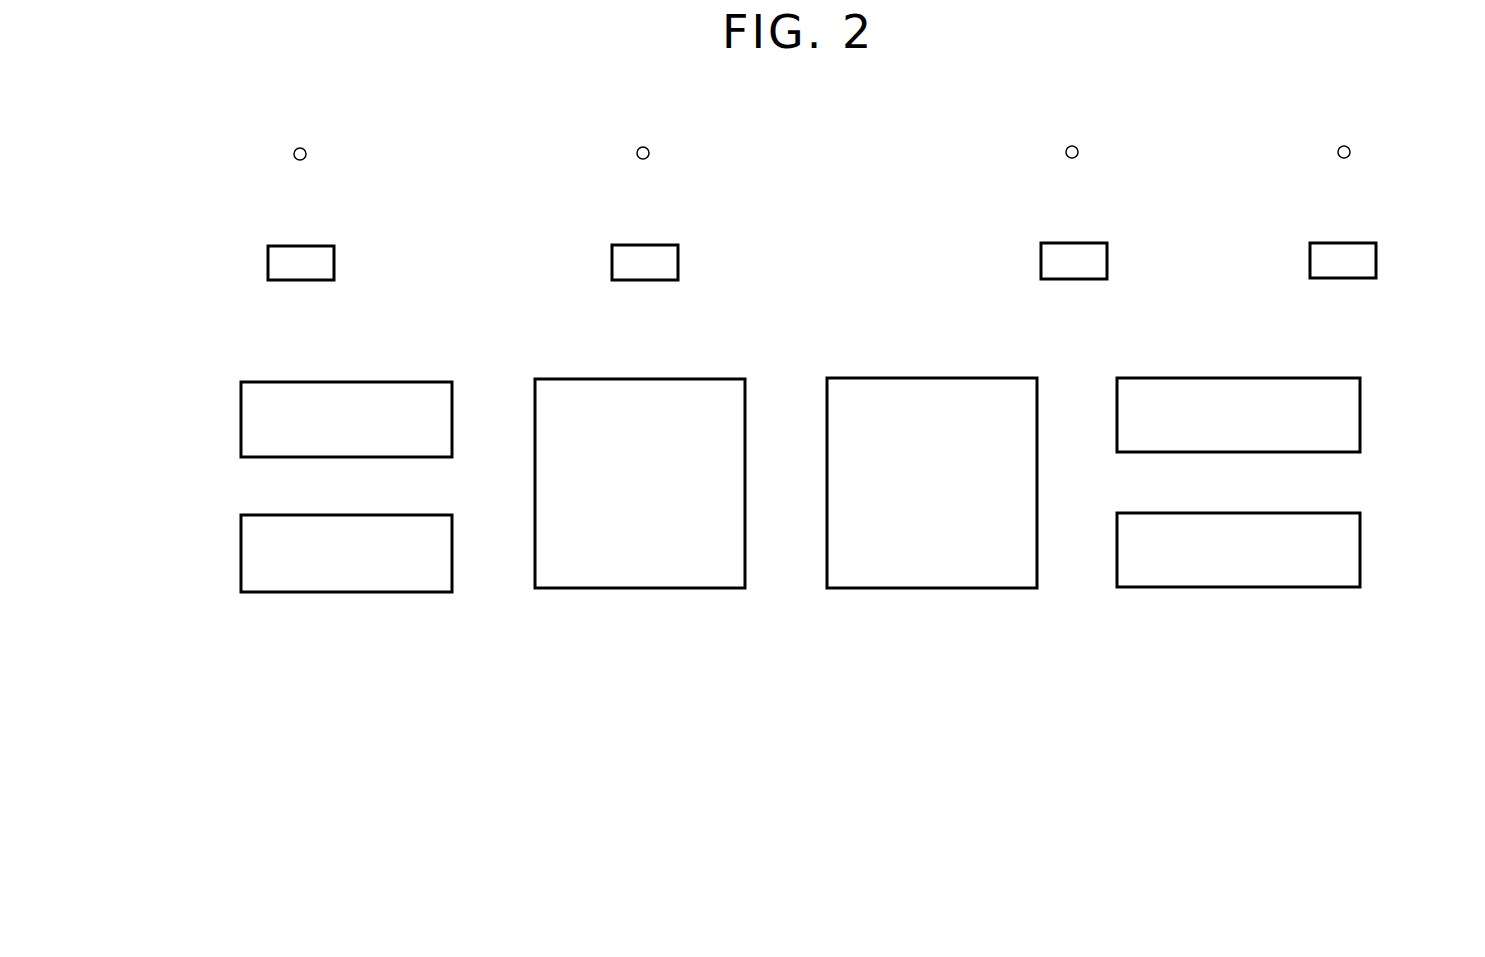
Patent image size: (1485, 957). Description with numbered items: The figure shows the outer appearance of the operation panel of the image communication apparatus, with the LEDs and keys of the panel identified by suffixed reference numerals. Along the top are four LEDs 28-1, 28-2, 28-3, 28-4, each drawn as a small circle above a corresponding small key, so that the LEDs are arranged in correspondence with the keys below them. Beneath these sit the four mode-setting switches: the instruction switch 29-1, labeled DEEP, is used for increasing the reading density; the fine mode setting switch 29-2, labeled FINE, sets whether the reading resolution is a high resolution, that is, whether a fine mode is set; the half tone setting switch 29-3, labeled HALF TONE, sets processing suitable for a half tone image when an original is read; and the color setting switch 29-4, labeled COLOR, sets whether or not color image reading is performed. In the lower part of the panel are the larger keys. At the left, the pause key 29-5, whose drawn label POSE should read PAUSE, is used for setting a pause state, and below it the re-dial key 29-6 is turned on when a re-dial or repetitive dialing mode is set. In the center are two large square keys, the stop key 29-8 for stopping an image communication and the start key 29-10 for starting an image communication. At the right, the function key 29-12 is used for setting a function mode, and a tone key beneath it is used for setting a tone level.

The LED 28-1 is at (306, 154).
The LED 28-2 is at (649, 153).
The LED 28-3 is at (1078, 152).
The LED 28-4 is at (1350, 152).
The instruction switch 29-1 is at (334, 263).
The fine mode setting switch 29-2 is at (678, 262).
The half tone setting switch 29-3 is at (1041, 261).
The color setting switch 29-4 is at (1310, 261).
The pause key 29-5 is at (277, 382).
The re-dial key 29-6 is at (275, 515).
The stop key 29-8 is at (600, 588).
The start key 29-10 is at (888, 588).
The function key 29-12 is at (1297, 378).